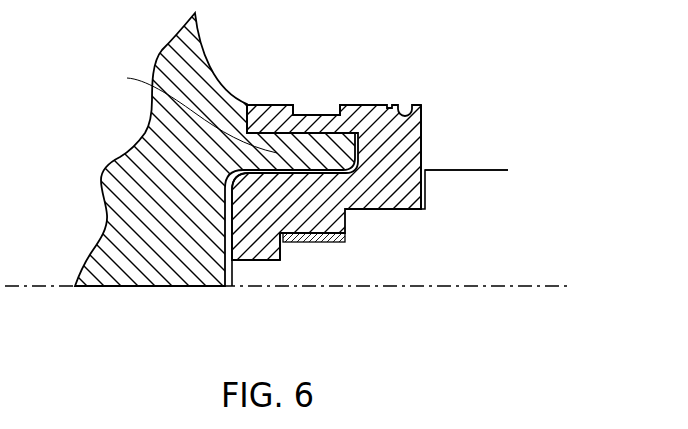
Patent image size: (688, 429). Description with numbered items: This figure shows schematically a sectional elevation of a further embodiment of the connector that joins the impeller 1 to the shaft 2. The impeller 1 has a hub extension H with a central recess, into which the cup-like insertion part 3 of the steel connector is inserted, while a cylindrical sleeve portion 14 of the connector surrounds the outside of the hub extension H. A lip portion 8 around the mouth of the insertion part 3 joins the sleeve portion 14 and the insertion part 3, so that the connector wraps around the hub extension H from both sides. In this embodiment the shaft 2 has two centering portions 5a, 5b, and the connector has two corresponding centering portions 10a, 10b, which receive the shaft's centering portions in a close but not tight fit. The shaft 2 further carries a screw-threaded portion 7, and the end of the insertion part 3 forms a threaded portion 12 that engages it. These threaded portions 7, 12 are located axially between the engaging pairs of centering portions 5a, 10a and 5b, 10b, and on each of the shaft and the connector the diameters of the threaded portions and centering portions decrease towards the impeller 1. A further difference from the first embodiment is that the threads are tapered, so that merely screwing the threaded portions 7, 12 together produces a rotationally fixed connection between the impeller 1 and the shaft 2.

The impeller 1 is at (108, 122).
The hub extension H is at (194, 110).
The shaft 2 is at (532, 243).
The insertion part 3 is at (300, 194).
The centering portion 5a is at (377, 232).
The centering portion 5b is at (258, 275).
The screw-threaded portion 7 is at (317, 257).
The lip portion 8 is at (388, 149).
The centering portion 10a is at (395, 189).
The centering portion 10b is at (250, 248).
The threaded portion 12 is at (319, 221).
The sleeve portion 14 is at (275, 116).